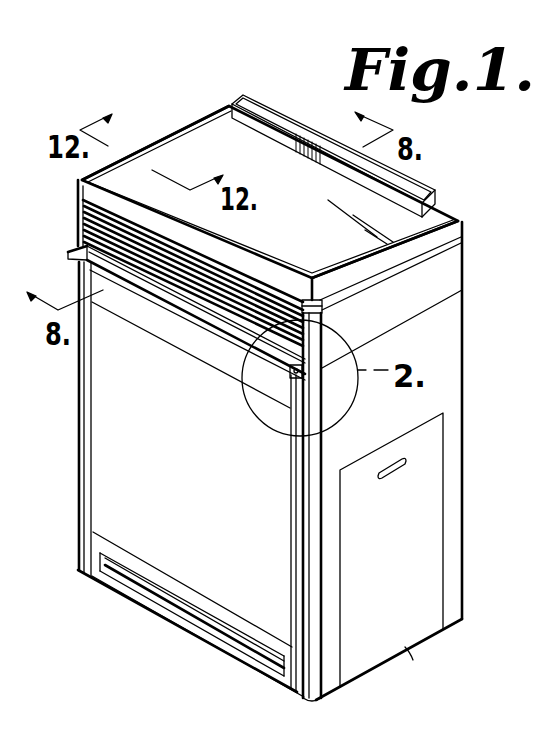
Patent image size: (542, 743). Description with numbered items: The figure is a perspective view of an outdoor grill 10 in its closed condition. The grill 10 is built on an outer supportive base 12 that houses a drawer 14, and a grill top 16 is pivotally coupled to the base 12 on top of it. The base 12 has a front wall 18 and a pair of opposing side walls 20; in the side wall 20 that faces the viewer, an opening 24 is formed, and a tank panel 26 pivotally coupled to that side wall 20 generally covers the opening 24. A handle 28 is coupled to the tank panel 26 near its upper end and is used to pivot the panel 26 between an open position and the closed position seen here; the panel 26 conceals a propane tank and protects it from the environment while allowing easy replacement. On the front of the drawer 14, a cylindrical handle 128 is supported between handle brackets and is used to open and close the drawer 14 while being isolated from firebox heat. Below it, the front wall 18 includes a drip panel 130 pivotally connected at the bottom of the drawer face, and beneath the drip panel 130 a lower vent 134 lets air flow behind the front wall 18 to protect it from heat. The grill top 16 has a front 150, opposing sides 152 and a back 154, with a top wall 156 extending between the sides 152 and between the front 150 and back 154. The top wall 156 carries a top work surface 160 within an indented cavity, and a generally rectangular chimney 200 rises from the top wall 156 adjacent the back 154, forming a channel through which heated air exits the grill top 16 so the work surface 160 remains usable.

The outdoor grill 10 is at (77, 420).
The base 12 is at (79, 455).
The drawer 14 is at (90, 283).
The grill top 16 is at (78, 203).
The front wall 18 is at (182, 461).
The side wall 20 is at (462, 510).
The opening 24 is at (418, 428).
The tank panel 26 is at (412, 667).
The handle 28 is at (398, 470).
The cylindrical handle 128 is at (174, 318).
The drip panel 130 is at (100, 500).
The lower vent 134 is at (240, 648).
The front 150 is at (82, 212).
The sides 152 is at (448, 273).
The back 154 is at (464, 243).
The top wall 156 is at (168, 137).
The top work surface 160 is at (310, 232).
The chimney 200 is at (436, 203).